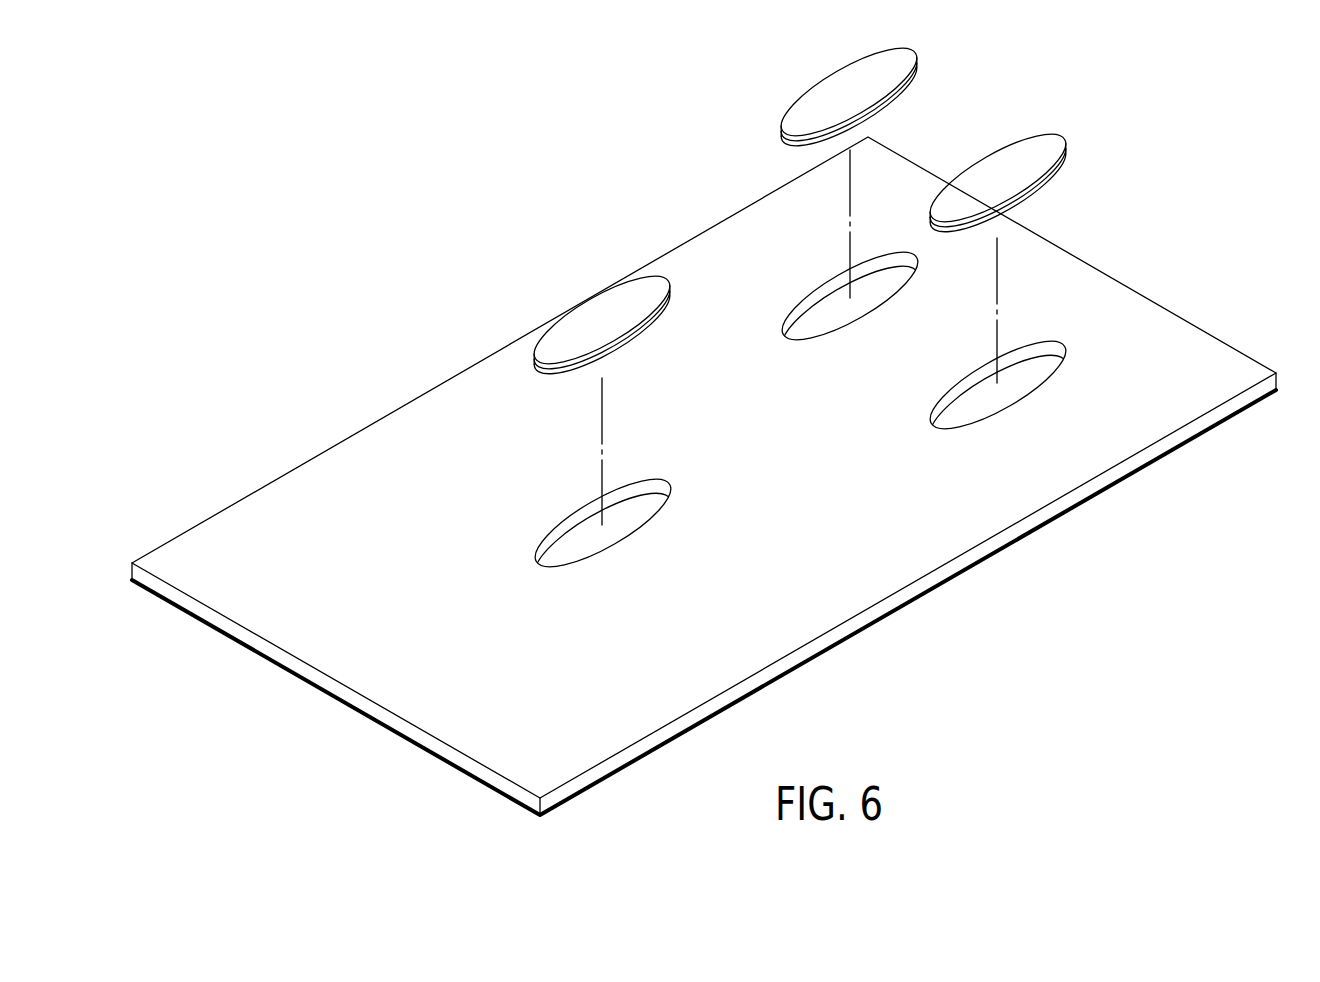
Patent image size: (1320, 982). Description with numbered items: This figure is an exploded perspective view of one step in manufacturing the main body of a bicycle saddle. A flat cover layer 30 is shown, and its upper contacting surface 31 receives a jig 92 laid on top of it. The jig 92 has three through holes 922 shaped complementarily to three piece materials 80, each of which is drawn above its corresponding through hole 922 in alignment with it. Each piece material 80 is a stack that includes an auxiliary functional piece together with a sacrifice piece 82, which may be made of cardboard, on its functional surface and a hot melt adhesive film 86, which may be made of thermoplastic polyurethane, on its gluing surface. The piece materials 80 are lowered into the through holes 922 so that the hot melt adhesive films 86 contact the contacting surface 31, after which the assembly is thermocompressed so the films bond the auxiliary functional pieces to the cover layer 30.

The cover layer 30 is at (1050, 536).
The contacting surface 31 is at (1025, 375).
The piece material 80 is at (831, 206).
The sacrifice piece 82 is at (1043, 150).
The hot melt adhesive film 86 is at (1047, 188).
The jig 92 is at (1216, 317).
The through hole 922 is at (769, 351).